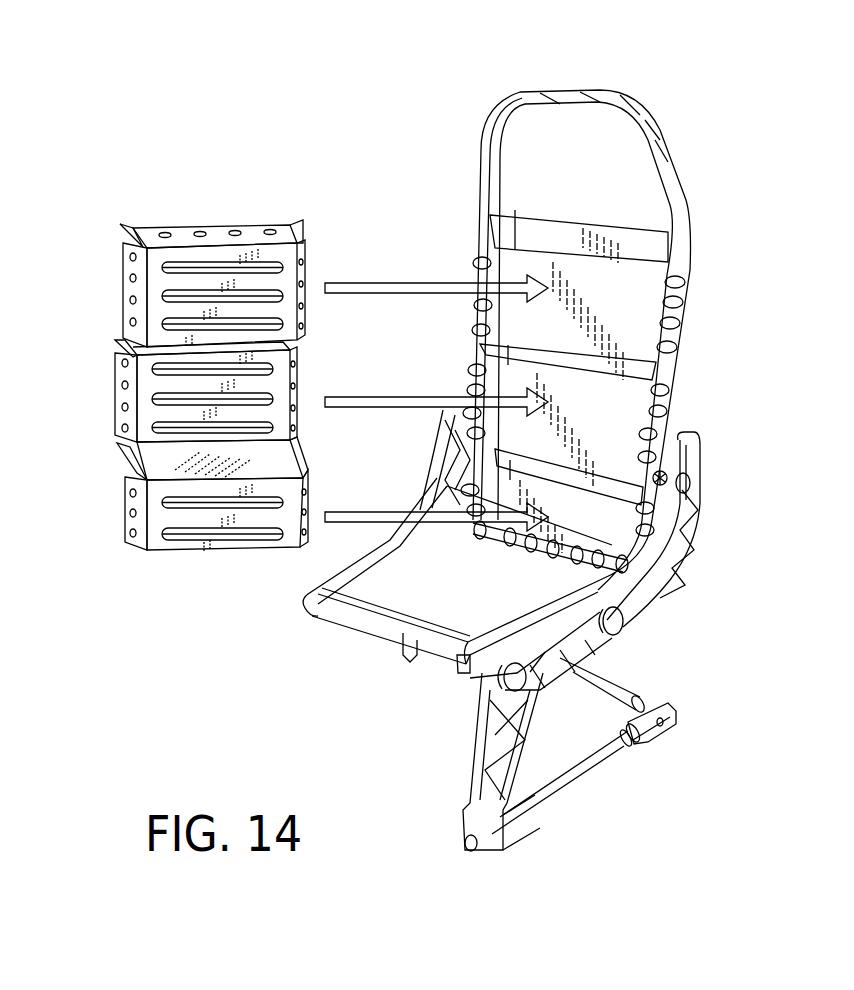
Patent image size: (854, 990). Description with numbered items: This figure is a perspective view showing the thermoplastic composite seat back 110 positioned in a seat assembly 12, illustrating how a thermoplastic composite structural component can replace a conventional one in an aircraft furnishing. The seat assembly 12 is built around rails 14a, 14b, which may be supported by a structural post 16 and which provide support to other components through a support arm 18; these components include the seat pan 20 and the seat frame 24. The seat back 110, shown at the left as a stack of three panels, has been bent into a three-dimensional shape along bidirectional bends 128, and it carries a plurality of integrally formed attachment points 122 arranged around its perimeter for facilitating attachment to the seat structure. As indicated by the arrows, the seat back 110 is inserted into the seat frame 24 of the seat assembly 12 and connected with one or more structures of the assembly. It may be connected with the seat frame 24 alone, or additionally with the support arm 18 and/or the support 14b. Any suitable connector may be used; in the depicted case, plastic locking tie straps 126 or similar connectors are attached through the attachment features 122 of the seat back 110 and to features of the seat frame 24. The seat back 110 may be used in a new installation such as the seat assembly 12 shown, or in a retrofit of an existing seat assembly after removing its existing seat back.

The seat assembly 12 is at (605, 60).
The rail 14a is at (515, 682).
The rail 14b is at (622, 640).
The structural post 16 is at (480, 768).
The support arm 18 is at (650, 552).
The seat pan 20 is at (432, 588).
The seat frame 24 is at (667, 148).
The thermoplastic composite seat back 110 is at (90, 266).
The attachment points 122 is at (122, 426).
The plastic locking tie straps 126 is at (688, 288).
The bidirectional bends 128 is at (132, 318).